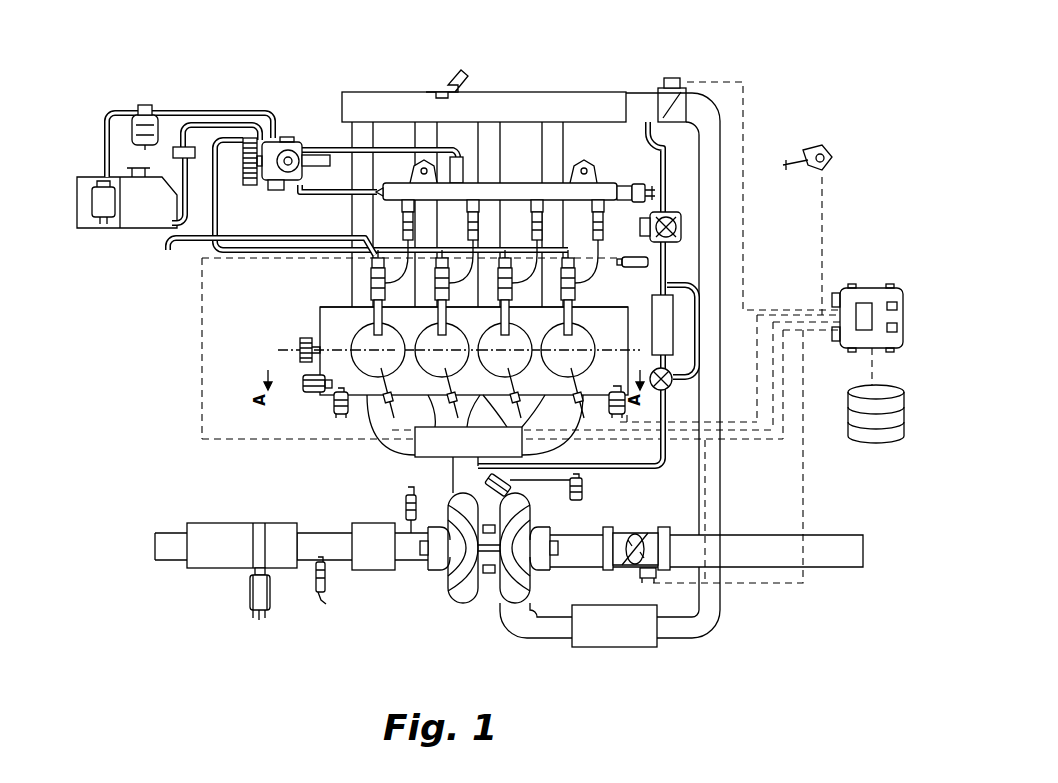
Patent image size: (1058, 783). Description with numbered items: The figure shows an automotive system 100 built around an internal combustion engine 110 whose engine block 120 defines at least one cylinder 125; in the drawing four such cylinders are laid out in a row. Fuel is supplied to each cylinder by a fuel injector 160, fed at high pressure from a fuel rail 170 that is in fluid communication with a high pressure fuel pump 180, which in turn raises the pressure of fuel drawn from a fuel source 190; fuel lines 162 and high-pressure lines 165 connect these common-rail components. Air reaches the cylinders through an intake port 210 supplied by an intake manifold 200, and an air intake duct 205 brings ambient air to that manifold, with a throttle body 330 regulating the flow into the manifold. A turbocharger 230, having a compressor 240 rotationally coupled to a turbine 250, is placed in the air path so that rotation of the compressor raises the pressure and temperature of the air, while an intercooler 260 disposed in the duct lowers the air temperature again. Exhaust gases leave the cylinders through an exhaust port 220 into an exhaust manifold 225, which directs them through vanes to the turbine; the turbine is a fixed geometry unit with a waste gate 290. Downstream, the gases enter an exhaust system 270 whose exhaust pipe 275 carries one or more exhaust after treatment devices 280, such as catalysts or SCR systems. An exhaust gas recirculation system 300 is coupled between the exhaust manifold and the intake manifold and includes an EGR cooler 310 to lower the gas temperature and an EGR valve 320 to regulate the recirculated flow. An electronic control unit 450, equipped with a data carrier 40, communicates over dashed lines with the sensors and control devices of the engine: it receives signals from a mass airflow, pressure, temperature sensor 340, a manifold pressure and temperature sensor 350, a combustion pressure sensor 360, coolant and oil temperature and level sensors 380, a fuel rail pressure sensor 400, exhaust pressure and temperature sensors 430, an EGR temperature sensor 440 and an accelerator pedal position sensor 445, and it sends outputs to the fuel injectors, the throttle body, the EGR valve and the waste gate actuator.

The automotive system 100 is at (250, 66).
The internal combustion engine 110 is at (584, 76).
The engine block 120 is at (322, 312).
The cylinder 125 is at (598, 322).
The fuel injector 160 is at (372, 290).
The fuel line 162 is at (337, 189).
The high pressure fuel line 165 is at (378, 229).
The fuel rail 170 is at (378, 195).
The high pressure fuel pump 180 is at (290, 140).
The fuel source 190 is at (150, 212).
The intake manifold 200 is at (492, 112).
The air intake duct 205 is at (832, 553).
The intake port 210 is at (365, 310).
The exhaust port 220 is at (382, 410).
The exhaust manifold 225 is at (406, 490).
The turbocharger 230 is at (456, 610).
The compressor 240 is at (516, 580).
The turbine 250 is at (452, 578).
The intercooler 260 is at (640, 632).
The exhaust system 270 is at (220, 500).
The exhaust pipe 275 is at (165, 545).
The exhaust after treatment device 280 is at (212, 548).
The waste gate 290 is at (512, 490).
The exhaust gas recirculation system 300 is at (636, 485).
The EGR cooler 310 is at (666, 352).
The EGR valve 320 is at (667, 212).
The throttle body 330 is at (672, 80).
The mass airflow, pressure, temperature sensor 340 is at (643, 568).
The manifold pressure and temperature sensor 350 is at (432, 74).
The combustion pressure sensor 360 is at (397, 420).
The coolant and oil temperature and level sensors 380 is at (336, 400).
The fuel rail pressure sensor 400 is at (648, 188).
The exhaust pressure and temperature sensors 430 is at (320, 600).
The EGR temperature sensor 440 is at (650, 262).
The accelerator pedal position sensor 445 is at (828, 148).
The electronic control unit 450 is at (872, 286).
The data carrier 40 is at (876, 445).